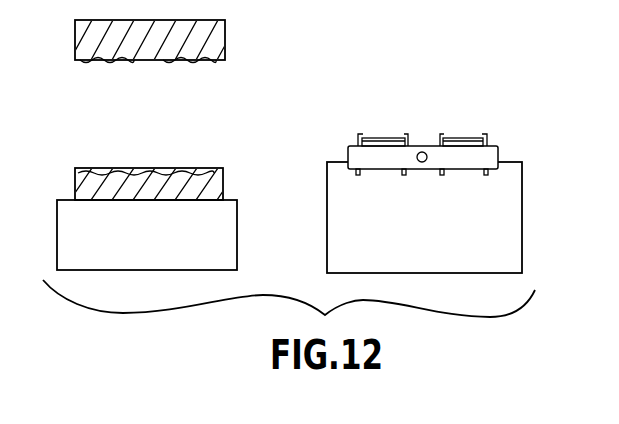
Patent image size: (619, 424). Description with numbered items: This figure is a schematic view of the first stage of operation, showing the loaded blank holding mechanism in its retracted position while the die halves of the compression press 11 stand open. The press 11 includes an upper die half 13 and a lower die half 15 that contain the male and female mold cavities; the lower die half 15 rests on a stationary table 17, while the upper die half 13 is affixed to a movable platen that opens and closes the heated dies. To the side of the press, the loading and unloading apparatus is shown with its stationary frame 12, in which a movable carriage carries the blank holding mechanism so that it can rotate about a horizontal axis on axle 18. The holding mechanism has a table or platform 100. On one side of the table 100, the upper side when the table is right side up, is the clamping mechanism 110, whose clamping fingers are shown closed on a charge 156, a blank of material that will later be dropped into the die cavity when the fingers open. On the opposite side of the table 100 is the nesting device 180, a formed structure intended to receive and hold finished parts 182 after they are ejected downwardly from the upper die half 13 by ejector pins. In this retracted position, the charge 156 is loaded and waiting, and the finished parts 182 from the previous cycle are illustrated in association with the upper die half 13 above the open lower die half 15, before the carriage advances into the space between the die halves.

The compression press 11 is at (234, 116).
The stationary frame 12 is at (508, 218).
The upper die half 13 is at (218, 40).
The lower die half 15 is at (212, 184).
The stationary table 17 is at (72, 248).
The axle 18 is at (423, 163).
The table 100 is at (485, 157).
The clamping mechanism 110 is at (366, 122).
The charge 156 is at (458, 137).
The nesting device 180 is at (388, 180).
The finished parts 182 is at (168, 63).